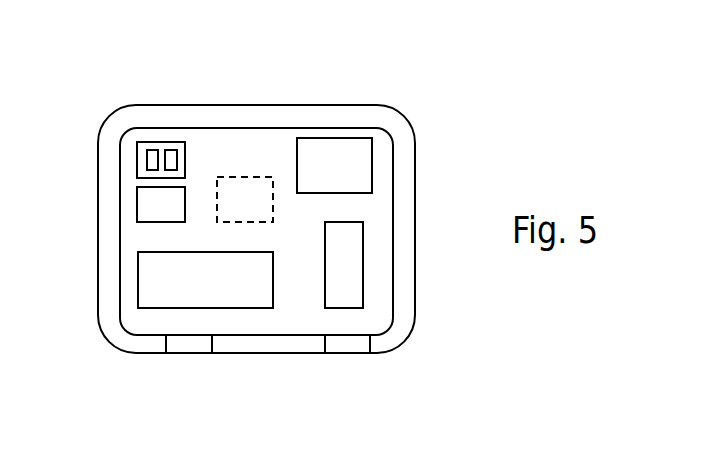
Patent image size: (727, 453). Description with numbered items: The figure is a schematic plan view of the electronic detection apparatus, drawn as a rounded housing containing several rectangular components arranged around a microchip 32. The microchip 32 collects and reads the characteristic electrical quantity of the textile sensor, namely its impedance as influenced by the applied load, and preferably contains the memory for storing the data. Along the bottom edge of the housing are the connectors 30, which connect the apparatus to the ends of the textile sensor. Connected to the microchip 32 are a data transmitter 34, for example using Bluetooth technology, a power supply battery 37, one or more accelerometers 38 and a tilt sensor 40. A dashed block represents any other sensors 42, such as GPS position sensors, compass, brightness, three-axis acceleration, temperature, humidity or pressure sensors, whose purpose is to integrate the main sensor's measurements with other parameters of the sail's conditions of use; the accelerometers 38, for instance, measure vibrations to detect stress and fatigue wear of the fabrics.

The connectors 30 is at (380, 305).
The microchip 32 is at (352, 263).
The data transmitter 34 is at (342, 157).
The power supply battery 37 is at (152, 287).
The accelerometers 38 is at (162, 142).
The tilt sensor 40 is at (150, 203).
The other sensors 42 is at (255, 198).